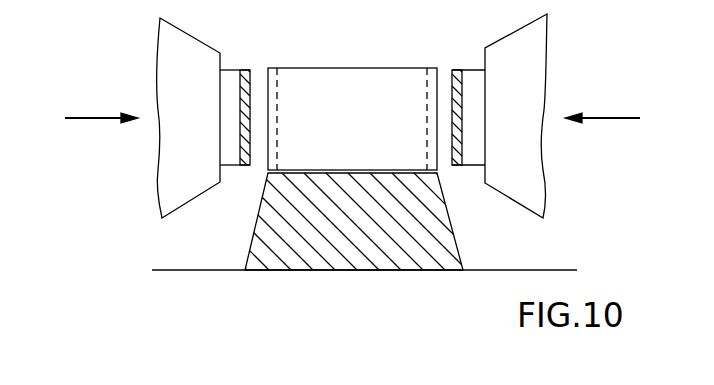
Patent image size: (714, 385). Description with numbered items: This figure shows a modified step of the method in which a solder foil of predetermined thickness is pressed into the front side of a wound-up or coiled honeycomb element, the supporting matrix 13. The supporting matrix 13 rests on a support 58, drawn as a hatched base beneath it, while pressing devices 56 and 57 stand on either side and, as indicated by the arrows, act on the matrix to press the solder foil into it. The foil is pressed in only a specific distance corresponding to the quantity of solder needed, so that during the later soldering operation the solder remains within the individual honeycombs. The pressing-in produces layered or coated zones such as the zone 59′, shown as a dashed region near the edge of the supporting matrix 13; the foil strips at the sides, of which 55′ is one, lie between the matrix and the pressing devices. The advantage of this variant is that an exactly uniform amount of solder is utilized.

The supporting matrix 13 is at (347, 82).
The first lining strip 55′ is at (243, 168).
The pressing device 56 is at (190, 195).
The pressing device 57 is at (538, 178).
The support 58 is at (450, 246).
The layered or coated zone 59′ is at (273, 68).